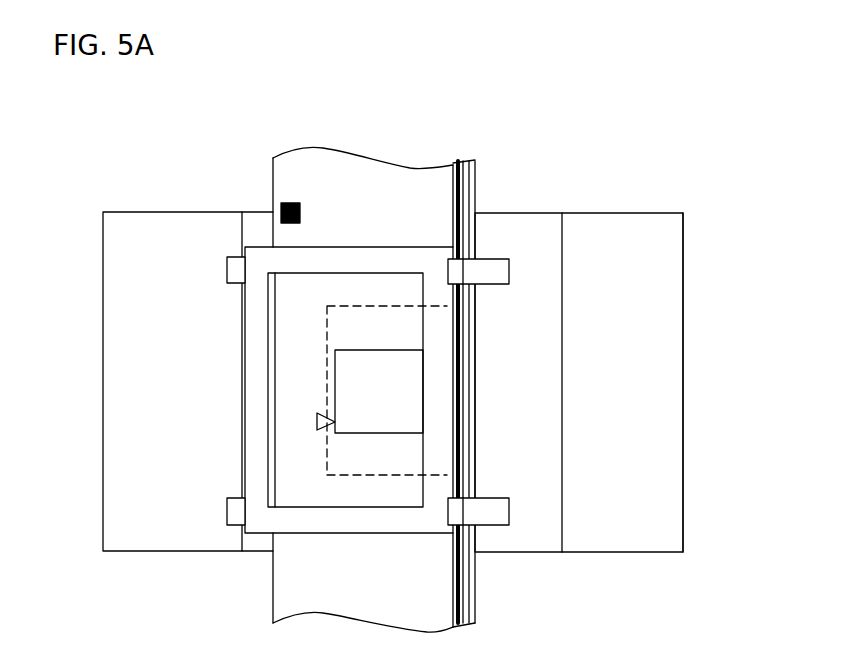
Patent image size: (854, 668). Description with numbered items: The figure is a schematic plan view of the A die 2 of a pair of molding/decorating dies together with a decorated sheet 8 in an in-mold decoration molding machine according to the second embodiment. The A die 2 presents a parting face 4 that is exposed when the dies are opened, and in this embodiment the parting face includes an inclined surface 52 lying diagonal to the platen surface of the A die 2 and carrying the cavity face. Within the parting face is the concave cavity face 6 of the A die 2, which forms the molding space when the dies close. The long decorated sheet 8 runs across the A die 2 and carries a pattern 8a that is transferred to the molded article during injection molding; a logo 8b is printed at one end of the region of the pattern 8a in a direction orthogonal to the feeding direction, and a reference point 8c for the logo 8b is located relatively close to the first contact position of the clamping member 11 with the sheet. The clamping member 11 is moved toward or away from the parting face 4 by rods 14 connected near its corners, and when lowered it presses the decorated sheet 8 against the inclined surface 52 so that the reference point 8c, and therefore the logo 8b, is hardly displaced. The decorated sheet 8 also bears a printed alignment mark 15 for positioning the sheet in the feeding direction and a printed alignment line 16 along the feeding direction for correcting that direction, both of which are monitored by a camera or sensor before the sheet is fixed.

The A die 2 is at (688, 263).
The parting face 4 is at (148, 545).
The inclined surface 52 is at (530, 533).
The concave cavity face 6 is at (322, 448).
The decorated sheet 8 is at (378, 153).
The pattern 8a is at (370, 423).
The logo 8b is at (363, 382).
The reference point 8c is at (332, 419).
The clamping member 11 is at (250, 347).
The rods 14 is at (231, 262).
The alignment mark 15 is at (291, 203).
The alignment line 16 is at (459, 172).